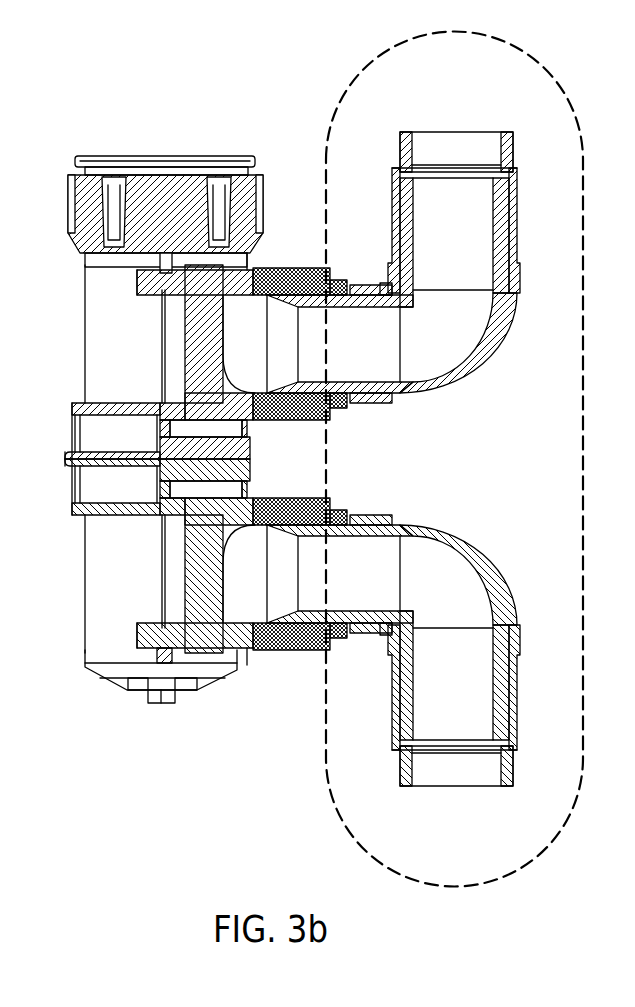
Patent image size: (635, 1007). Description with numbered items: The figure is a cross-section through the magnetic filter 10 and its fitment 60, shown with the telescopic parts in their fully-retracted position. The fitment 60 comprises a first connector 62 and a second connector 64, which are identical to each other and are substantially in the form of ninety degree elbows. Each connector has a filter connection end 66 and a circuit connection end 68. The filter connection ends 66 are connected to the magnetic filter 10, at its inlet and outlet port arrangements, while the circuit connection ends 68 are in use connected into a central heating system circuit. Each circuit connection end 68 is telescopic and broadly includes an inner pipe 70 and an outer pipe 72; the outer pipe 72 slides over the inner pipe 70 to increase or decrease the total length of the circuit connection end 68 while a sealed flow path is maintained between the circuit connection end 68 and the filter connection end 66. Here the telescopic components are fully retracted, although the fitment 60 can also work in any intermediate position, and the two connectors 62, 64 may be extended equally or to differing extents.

The magnetic filter 10 is at (90, 326).
The fitment 60 is at (572, 99).
The first connector 62 is at (477, 362).
The second connector 64 is at (480, 562).
The filter connection end 66 is at (372, 292).
The circuit connection end 68 is at (455, 132).
The inner pipe 70 is at (507, 225).
The outer pipe 72 is at (516, 207).